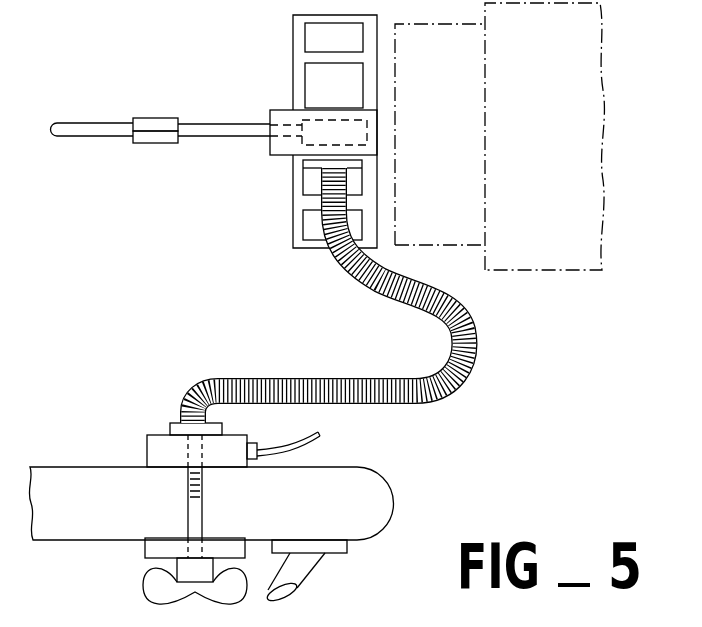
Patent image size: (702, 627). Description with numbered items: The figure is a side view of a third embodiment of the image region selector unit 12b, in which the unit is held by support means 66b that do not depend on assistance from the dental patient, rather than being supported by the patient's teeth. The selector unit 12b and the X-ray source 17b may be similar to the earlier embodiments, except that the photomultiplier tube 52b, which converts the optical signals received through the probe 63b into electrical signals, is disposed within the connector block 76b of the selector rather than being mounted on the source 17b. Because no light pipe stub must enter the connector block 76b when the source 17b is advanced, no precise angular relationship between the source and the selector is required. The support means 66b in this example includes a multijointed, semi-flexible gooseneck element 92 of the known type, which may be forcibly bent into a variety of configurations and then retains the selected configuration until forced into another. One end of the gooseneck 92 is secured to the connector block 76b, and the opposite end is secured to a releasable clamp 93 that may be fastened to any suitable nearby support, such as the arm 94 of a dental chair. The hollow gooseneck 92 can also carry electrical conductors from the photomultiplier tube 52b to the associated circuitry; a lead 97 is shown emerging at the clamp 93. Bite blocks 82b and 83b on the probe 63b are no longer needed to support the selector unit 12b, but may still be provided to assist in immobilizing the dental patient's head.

The probe 63b is at (92, 139).
The bite block 82b is at (163, 117).
The bite block 83b is at (166, 144).
The image region selector unit 12b is at (237, 164).
The connector block 76b is at (277, 157).
The photomultiplier tube 52b is at (316, 116).
The support means 66b is at (204, 350).
The gooseneck element 92 is at (468, 373).
The X-ray source 17b is at (571, 273).
The releasable clamp 93 is at (144, 424).
The wire 97 is at (320, 434).
The arm 94 is at (343, 511).